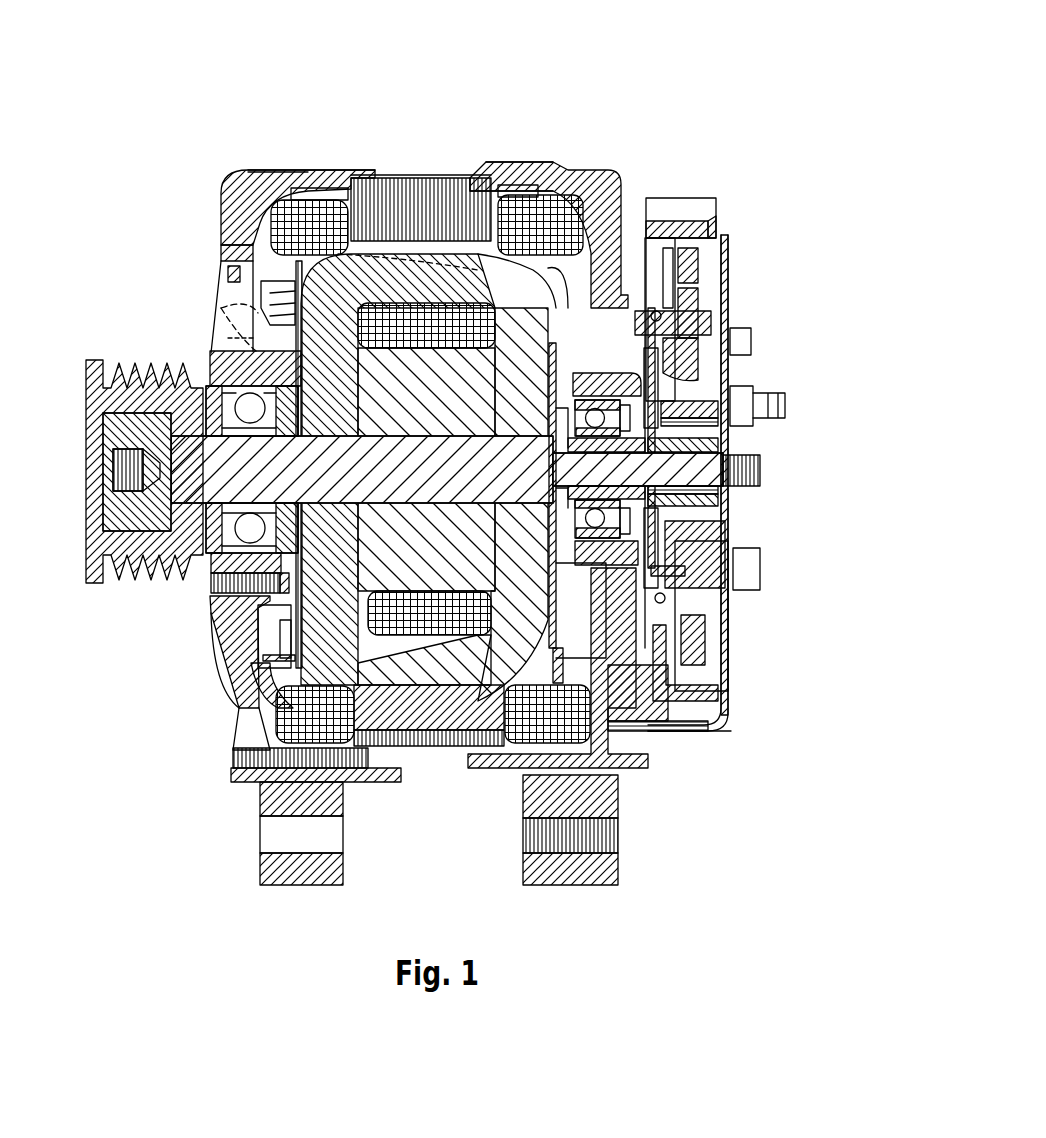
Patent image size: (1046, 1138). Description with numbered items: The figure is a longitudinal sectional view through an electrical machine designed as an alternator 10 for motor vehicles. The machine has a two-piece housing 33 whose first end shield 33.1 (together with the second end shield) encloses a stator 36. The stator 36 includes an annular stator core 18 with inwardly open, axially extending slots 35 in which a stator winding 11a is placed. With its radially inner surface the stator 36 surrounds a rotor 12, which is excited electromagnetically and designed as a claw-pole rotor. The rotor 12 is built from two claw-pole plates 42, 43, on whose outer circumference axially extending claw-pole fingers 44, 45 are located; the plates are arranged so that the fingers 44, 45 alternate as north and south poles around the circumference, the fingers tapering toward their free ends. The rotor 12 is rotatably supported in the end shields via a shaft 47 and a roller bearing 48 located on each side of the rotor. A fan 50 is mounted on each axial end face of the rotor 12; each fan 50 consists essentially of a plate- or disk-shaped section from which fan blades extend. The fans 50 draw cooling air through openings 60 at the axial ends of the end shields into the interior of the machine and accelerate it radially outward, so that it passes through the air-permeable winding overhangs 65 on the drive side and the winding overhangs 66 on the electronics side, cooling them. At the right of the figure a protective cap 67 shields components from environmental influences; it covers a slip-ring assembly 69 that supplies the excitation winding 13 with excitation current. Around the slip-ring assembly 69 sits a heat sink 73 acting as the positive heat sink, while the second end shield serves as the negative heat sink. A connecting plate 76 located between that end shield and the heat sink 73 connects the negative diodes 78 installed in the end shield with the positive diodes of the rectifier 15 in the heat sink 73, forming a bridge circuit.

The alternator 10 is at (655, 66).
The stator winding 11a is at (505, 182).
The rotor 12 is at (302, 659).
The excitation winding 13 is at (408, 724).
The rectifier 15 is at (732, 712).
The stator core 18 is at (381, 185).
The housing 33 is at (218, 152).
The first end shield 33.1 is at (258, 180).
The slots 35 is at (437, 738).
The stator 36 is at (413, 157).
The claw-pole plate 42 is at (185, 480).
The claw-pole plate 43 is at (658, 586).
The claw-pole fingers 44 is at (300, 243).
The claw-pole fingers 45 is at (600, 298).
The shaft 47 is at (140, 553).
The roller bearing 48 is at (238, 405).
The fan 50 is at (240, 272).
The openings 60 is at (222, 306).
The winding overhangs 65 is at (291, 188).
The winding overhangs 66 is at (548, 198).
The protective cap 67 is at (720, 638).
The slip-ring assembly 69 is at (703, 484).
The heat sink 73 is at (680, 286).
The connecting plate 76 is at (660, 613).
The negative diodes 78 is at (648, 700).